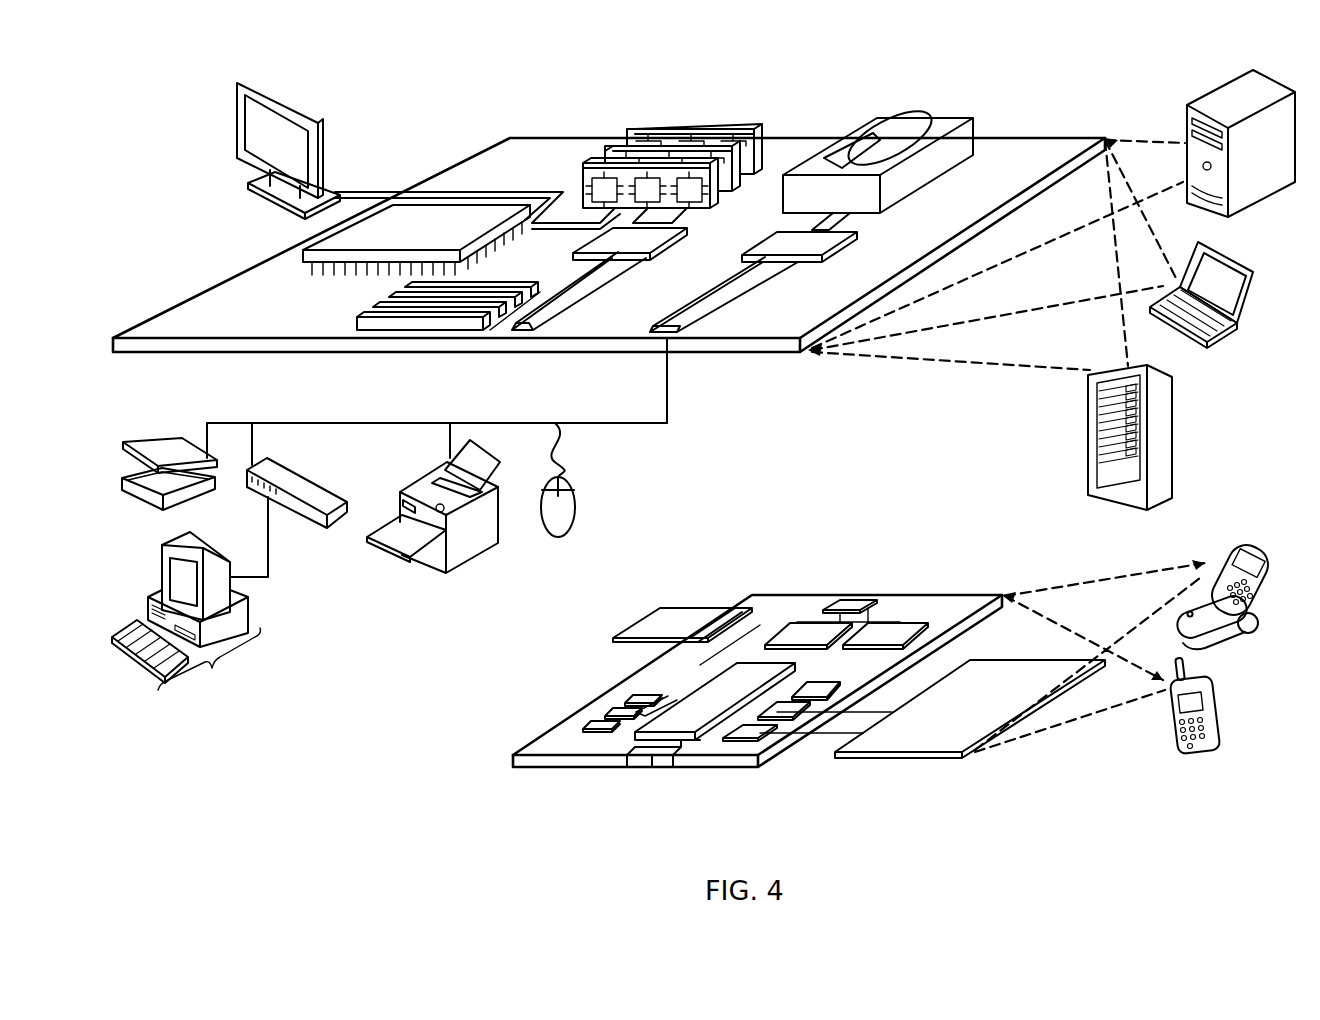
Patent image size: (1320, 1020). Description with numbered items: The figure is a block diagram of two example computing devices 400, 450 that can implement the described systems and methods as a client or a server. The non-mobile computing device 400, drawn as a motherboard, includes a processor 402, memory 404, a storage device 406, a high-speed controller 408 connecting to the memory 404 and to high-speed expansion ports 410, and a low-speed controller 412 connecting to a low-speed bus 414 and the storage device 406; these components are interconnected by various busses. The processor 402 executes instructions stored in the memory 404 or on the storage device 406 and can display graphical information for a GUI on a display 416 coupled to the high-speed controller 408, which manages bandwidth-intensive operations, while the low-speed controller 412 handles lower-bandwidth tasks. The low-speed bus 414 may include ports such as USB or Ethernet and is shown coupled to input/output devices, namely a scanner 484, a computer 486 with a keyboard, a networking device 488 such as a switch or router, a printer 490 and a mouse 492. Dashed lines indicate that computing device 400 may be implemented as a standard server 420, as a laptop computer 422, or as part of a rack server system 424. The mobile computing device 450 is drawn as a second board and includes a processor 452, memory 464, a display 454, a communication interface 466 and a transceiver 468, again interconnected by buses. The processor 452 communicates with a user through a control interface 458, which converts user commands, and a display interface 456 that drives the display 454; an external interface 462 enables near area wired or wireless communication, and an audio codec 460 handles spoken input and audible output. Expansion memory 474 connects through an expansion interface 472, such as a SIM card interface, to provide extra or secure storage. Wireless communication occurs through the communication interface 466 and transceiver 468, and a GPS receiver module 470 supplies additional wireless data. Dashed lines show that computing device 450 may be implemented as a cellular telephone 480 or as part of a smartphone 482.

The computing device 400 is at (147, 94).
The processor 402 is at (310, 258).
The memory 404 is at (633, 132).
The storage device 406 is at (868, 118).
The high-speed controller 408 is at (603, 238).
The high-speed expansion ports 410 is at (363, 318).
The low-speed controller 412 is at (783, 240).
The low-speed bus 414 is at (678, 340).
The display 416 is at (247, 84).
The standard server 420 is at (1187, 122).
The laptop computer 422 is at (1252, 268).
The rack server system 424 is at (1088, 461).
The computing device 450 is at (483, 770).
The processor 452 is at (693, 732).
The display 454 is at (927, 741).
The display interface 456 is at (762, 738).
The control interface 458 is at (794, 717).
The audio codec 460 is at (820, 697).
The external interface 462 is at (652, 768).
The memory 464 is at (600, 717).
The communication interface 466 is at (808, 633).
The transceiver 468 is at (888, 631).
The GPS receiver module 470 is at (858, 602).
The expansion interface 472 is at (738, 607).
The expansion memory 474 is at (663, 607).
The cellular telephone 480 is at (1227, 548).
The smartphone 482 is at (1167, 710).
The scanner 484 is at (157, 440).
The computer 486 is at (186, 615).
The networking device 488 is at (318, 484).
The printer 490 is at (430, 573).
The mouse 492 is at (560, 540).